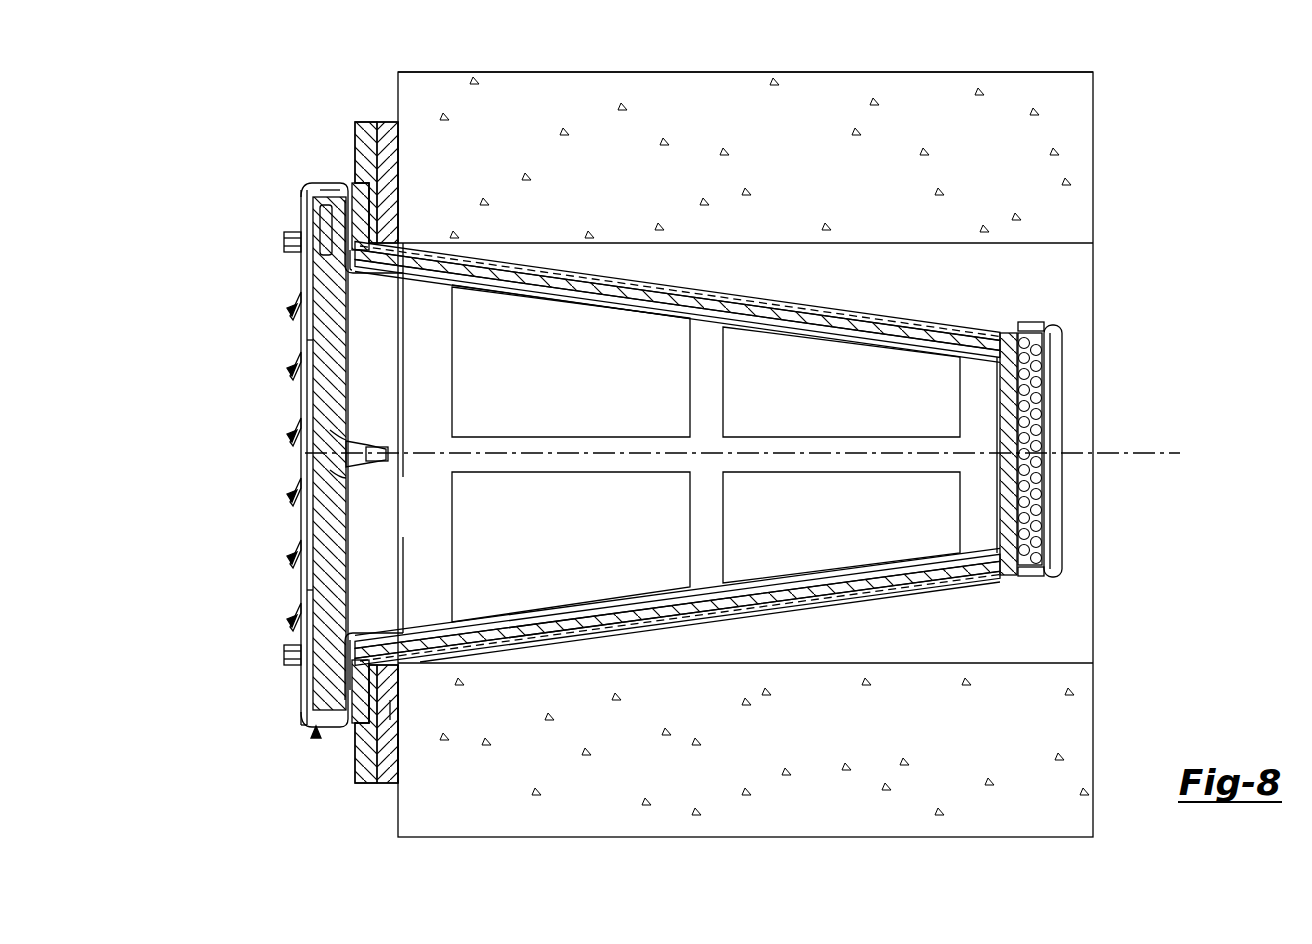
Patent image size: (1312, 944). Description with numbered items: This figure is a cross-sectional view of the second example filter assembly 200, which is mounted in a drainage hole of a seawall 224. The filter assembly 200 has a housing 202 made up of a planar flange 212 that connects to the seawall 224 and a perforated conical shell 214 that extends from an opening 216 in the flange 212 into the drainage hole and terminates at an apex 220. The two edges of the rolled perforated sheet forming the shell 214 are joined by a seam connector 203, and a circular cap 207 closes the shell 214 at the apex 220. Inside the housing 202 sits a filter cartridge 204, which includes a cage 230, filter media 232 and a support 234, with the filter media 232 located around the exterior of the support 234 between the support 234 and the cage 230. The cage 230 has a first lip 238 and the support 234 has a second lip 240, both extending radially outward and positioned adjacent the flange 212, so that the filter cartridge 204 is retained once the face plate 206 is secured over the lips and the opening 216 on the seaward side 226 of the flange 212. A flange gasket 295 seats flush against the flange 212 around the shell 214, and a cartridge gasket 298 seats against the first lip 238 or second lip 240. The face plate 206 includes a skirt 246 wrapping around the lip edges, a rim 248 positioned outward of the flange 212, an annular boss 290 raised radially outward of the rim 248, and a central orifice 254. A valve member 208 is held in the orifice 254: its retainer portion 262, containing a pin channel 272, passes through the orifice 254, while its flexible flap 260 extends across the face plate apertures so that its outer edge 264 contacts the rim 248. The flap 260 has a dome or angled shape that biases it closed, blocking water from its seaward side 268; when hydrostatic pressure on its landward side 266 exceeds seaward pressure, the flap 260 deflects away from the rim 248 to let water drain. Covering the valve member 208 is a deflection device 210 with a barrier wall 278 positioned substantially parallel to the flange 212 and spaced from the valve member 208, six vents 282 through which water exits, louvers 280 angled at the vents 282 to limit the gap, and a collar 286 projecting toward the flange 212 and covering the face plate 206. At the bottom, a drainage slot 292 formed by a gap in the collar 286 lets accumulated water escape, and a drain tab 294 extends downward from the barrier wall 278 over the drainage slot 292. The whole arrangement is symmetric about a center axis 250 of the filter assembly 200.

The filter assembly 200 is at (226, 124).
The housing 202 is at (332, 100).
The seam connector 203 is at (860, 600).
The filter cartridge 204 is at (832, 300).
The face plate 206 is at (304, 193).
The cap 207 is at (1050, 586).
The valve member 208 is at (303, 530).
The deflection device 210 is at (302, 207).
The flange 212 is at (356, 120).
The shell 214 is at (922, 318).
The opening 216 is at (368, 256).
The apex 220 is at (1047, 325).
The seawall 224 is at (1072, 700).
The seaward side 226 is at (360, 786).
The cage 230 is at (682, 280).
The filter media 232 is at (760, 288).
The support 234 is at (755, 332).
The first lip 238 is at (343, 182).
The second lip 240 is at (300, 270).
The skirt 246 is at (342, 706).
The rim 248 is at (300, 656).
The center axis 250 is at (1135, 450).
The orifice 254 is at (346, 440).
The flap 260 is at (315, 340).
The retainer portion 262 is at (346, 478).
The outer edge 264 is at (340, 650).
The landward side 266 is at (346, 540).
The seaward side 268 is at (313, 590).
The pin channel 272 is at (390, 439).
The barrier wall 278 is at (292, 242).
The louvers 280 is at (290, 297).
The vents 282 is at (290, 312).
The collar 286 is at (322, 193).
The annular boss 290 is at (315, 227).
The drainage slot 292 is at (316, 740).
The drain tab 294 is at (305, 713).
The flange gasket 295 is at (393, 786).
The cartridge gasket 298 is at (393, 716).